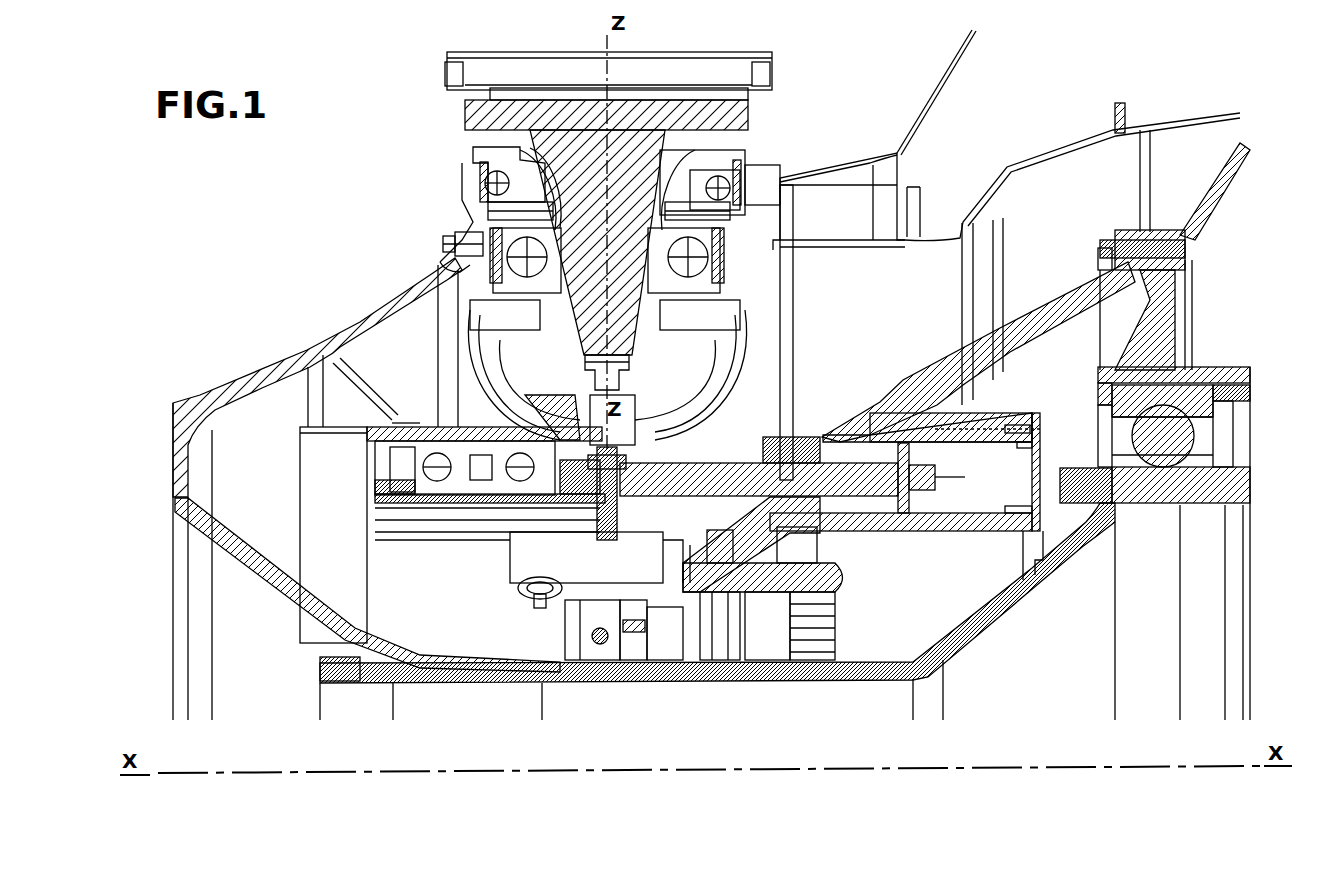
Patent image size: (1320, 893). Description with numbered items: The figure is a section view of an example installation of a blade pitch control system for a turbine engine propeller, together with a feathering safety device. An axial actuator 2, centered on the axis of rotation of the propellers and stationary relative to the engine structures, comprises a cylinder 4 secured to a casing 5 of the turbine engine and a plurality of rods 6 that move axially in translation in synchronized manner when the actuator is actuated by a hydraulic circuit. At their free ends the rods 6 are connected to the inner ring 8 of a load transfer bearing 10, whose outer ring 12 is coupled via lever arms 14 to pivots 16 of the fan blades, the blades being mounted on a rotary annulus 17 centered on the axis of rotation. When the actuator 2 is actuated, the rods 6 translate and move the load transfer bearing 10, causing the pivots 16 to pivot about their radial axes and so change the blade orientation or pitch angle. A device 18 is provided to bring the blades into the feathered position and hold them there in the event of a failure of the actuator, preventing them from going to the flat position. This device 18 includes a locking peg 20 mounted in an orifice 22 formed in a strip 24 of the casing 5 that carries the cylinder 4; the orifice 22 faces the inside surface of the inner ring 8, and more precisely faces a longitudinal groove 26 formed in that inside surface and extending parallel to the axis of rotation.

The axial actuator 2 is at (822, 405).
The cylinder 4 is at (975, 450).
The casing 5 is at (920, 412).
The rods 6 is at (738, 470).
The inner ring 8 is at (462, 500).
The load transfer bearing 10 is at (388, 472).
The outer ring 12 is at (420, 440).
The lever arms 14 is at (598, 384).
The pivots 16 is at (776, 178).
The rotary annulus 17 is at (470, 188).
The device 18 is at (492, 602).
The locking peg 20 is at (545, 606).
The orifice 22 is at (597, 590).
The strip 24 is at (540, 563).
The longitudinal groove 26 is at (385, 540).